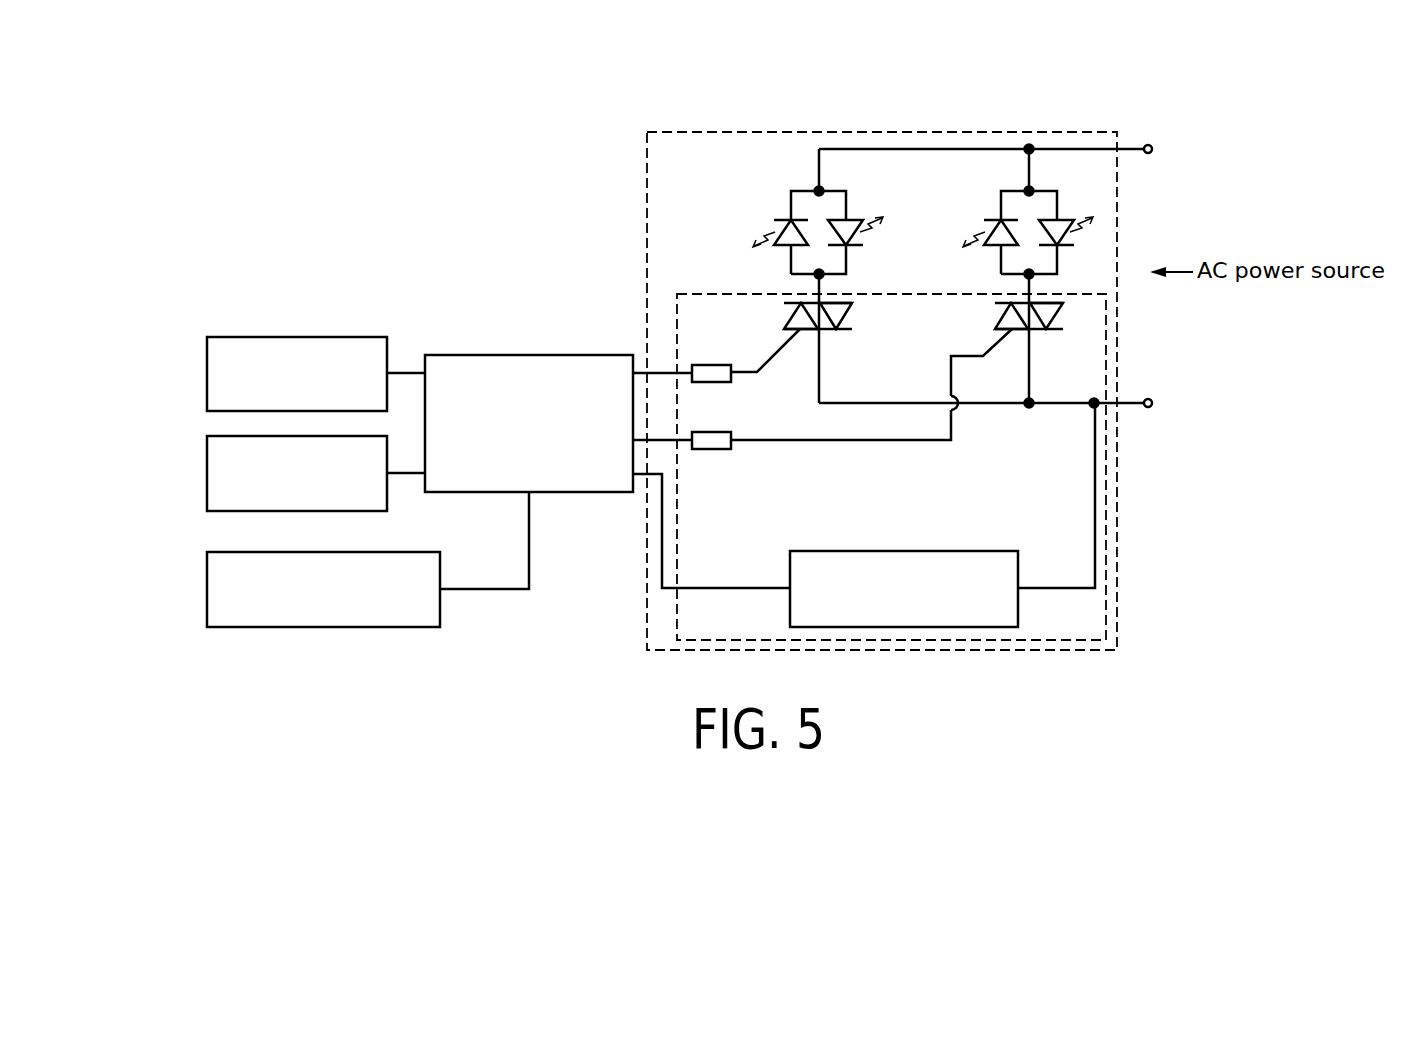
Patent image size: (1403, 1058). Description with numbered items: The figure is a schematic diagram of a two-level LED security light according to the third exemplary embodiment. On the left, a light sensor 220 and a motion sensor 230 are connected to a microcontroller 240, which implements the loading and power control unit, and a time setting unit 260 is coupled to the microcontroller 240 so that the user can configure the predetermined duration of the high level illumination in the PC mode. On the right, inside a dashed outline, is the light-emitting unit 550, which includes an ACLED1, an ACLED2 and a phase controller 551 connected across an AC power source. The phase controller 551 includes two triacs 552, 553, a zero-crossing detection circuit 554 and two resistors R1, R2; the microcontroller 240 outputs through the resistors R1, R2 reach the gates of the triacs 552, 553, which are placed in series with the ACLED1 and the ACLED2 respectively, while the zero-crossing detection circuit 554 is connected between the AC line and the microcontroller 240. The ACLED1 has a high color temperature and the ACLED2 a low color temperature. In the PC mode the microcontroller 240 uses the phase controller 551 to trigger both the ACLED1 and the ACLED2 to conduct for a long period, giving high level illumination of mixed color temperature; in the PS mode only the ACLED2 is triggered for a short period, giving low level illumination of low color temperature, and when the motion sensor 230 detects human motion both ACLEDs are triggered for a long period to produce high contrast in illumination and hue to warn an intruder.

The light sensor 220 is at (207, 372).
The motion sensor 230 is at (207, 471).
The microcontroller 240 is at (530, 355).
The time setting unit 260 is at (207, 585).
The light-emitting unit 550 is at (647, 172).
The phase controller 551 is at (707, 294).
The triac 552 is at (830, 333).
The triac 553 is at (1040, 333).
The zero-crossing detection circuit 554 is at (905, 551).
The resistor R1 is at (682, 360).
The resistor R2 is at (682, 427).
The ACLED ACLED1 is at (818, 232).
The ACLED ACLED2 is at (1028, 232).